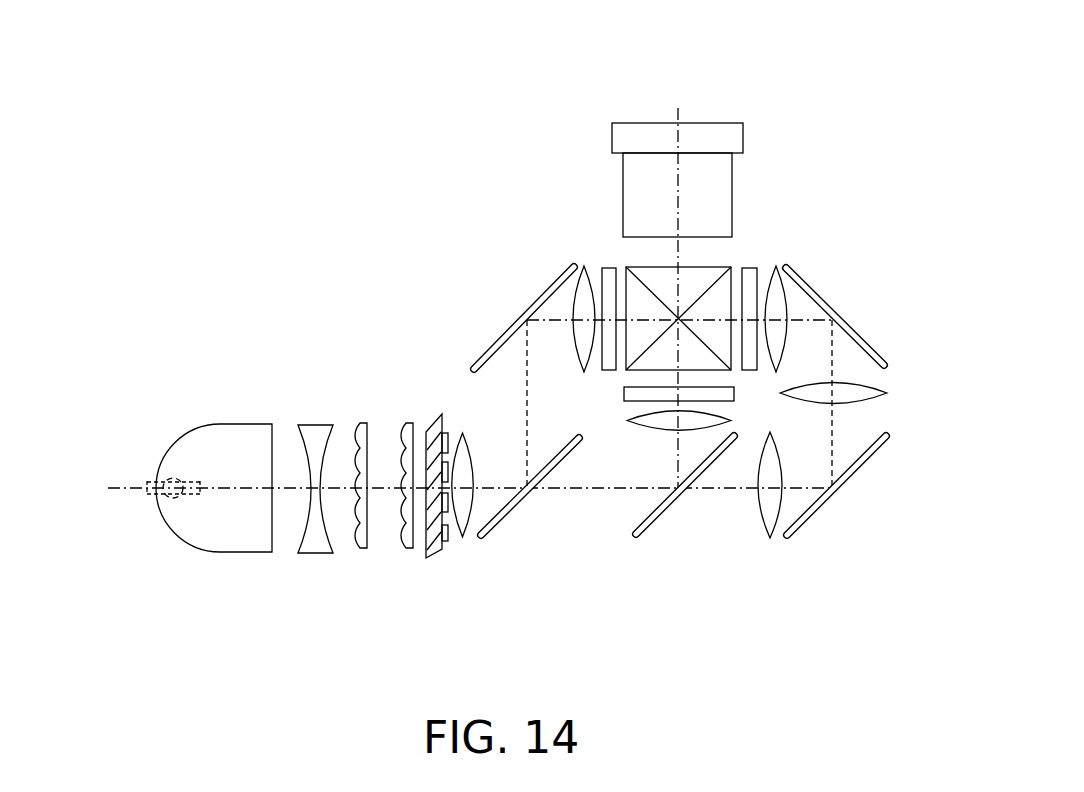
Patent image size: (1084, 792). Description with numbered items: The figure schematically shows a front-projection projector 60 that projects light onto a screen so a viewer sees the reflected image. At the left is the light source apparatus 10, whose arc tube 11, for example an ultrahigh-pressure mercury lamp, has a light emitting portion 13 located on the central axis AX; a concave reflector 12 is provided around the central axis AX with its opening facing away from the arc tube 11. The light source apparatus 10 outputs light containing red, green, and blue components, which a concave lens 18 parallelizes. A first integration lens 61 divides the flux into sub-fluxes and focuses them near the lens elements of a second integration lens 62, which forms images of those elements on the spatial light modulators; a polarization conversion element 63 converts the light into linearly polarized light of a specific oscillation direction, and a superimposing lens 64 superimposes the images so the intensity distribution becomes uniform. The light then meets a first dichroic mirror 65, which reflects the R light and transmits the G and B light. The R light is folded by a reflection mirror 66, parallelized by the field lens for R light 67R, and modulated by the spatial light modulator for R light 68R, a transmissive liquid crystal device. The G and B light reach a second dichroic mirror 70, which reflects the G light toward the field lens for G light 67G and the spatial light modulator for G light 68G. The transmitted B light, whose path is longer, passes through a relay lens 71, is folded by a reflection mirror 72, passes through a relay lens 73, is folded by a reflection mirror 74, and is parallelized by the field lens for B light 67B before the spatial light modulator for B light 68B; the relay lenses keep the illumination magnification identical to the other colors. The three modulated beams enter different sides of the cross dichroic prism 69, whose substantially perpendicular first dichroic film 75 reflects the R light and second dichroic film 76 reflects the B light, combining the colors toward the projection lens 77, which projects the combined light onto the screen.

The projector 60 is at (338, 156).
The light source apparatus 10 is at (212, 400).
The arc tube 11 is at (159, 482).
The reflector 12 is at (240, 545).
The light emitting portion 13 is at (173, 497).
The central axis AX is at (135, 487).
The concave lens 18 is at (320, 432).
The first integration lens 61 is at (363, 553).
The second integration lens 62 is at (408, 553).
The polarization conversion element 63 is at (432, 553).
The superimposing lens 64 is at (470, 541).
The first dichroic mirror 65 is at (495, 540).
The reflection mirror 66 is at (552, 293).
The field lens for R light 67R is at (591, 292).
The spatial light modulator for R light 68R is at (610, 268).
The cross dichroic prism 69 is at (632, 353).
The second dichroic film 76 is at (734, 363).
The first dichroic film 75 is at (719, 276).
The spatial light modulator for B light 68B is at (748, 267).
The field lens for B light 67B is at (773, 277).
The projection lens 77 is at (745, 137).
The reflection mirror 74 is at (878, 348).
The relay lens 73 is at (887, 393).
The reflection mirror 72 is at (857, 475).
The relay lens 71 is at (773, 533).
The second dichroic mirror 70 is at (658, 517).
The spatial light modulator for G light 68G is at (753, 403).
The field lens for G light 67G is at (630, 423).